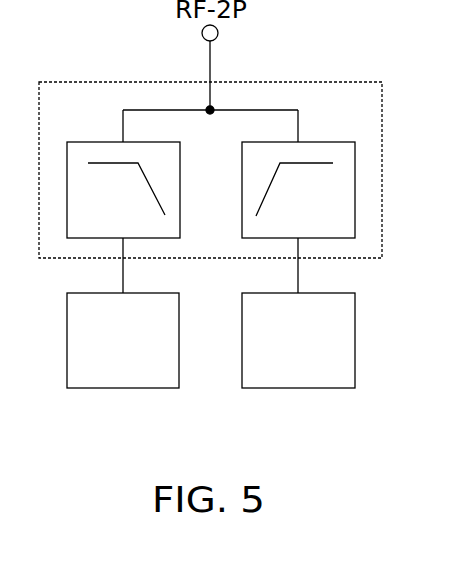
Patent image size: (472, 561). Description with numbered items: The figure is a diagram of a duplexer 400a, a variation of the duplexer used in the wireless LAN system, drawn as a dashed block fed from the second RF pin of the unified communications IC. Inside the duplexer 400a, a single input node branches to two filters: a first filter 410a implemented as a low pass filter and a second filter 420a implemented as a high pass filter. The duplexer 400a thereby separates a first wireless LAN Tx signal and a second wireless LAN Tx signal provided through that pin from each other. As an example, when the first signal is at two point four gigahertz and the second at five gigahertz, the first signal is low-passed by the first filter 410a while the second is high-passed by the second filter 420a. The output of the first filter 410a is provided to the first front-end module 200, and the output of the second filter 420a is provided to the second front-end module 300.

The duplexer 400a is at (340, 82).
The first filter 410a is at (96, 142).
The second filter 420a is at (323, 142).
The first front-end module 200 is at (123, 388).
The second front-end module 300 is at (298, 388).